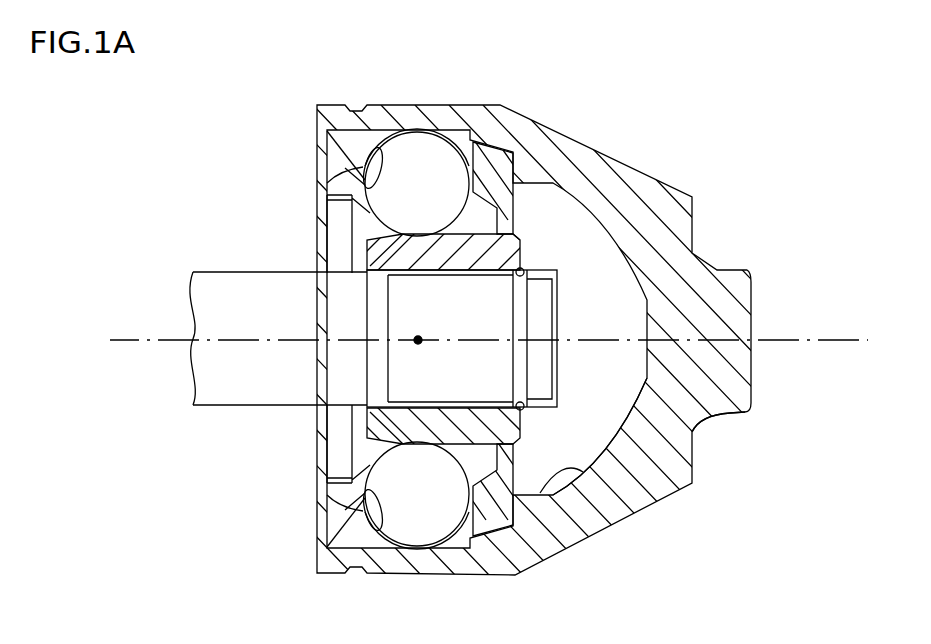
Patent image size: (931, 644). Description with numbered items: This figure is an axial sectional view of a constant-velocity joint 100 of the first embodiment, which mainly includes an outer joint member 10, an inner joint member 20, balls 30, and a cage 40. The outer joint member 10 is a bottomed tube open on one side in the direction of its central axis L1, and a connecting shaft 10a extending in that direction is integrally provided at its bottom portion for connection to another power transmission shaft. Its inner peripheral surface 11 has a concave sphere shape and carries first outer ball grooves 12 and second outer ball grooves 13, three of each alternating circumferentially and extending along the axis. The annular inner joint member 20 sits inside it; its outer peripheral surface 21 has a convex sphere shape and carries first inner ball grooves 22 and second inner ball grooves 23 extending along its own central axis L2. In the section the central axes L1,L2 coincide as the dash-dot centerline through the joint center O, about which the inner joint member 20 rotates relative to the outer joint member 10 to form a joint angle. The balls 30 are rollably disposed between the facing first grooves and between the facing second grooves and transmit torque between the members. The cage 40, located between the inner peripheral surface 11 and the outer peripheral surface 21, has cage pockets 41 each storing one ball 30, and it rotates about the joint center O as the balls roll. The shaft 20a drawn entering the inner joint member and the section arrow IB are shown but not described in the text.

The outer joint member 10 is at (680, 470).
The connecting shaft 10a is at (722, 416).
The inner peripheral surface 11 is at (583, 472).
The first outer ball grooves 12 is at (483, 147).
The second outer ball grooves 13 is at (477, 528).
The inner joint member 20 is at (515, 242).
The shaft 20a is at (217, 397).
The outer peripheral surface 21 is at (367, 219).
The first inner ball grooves 22 is at (513, 230).
The second inner ball grooves 23 is at (515, 503).
The balls 30 is at (438, 157).
The cage 40 is at (476, 175).
The cage pockets 41 is at (380, 150).
The constant-velocity joint 100 is at (675, 151).
The joint center O is at (418, 343).
The central axes L1,L2 is at (464, 298).
The central axis L1 is at (464, 298).
The central axis L2 is at (120, 336).
The section view direction IB is at (264, 157).